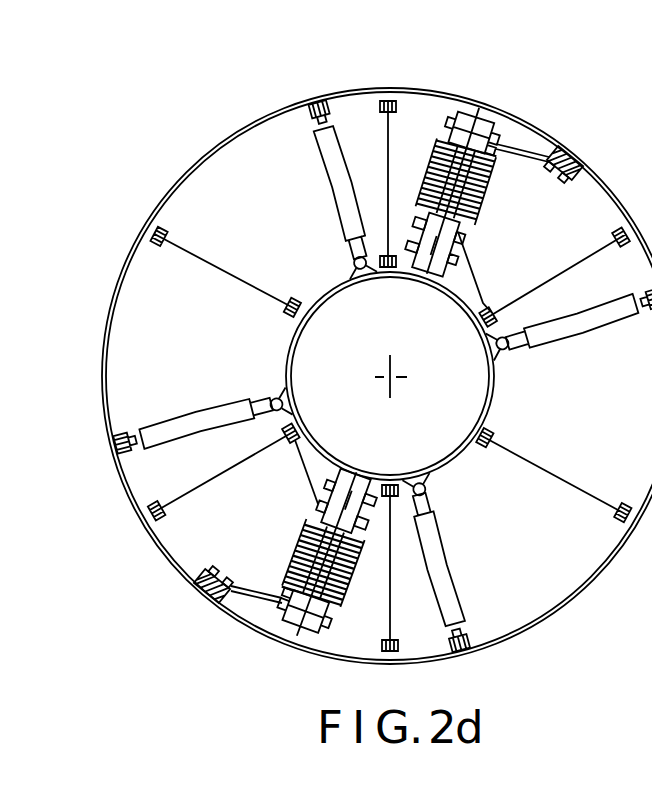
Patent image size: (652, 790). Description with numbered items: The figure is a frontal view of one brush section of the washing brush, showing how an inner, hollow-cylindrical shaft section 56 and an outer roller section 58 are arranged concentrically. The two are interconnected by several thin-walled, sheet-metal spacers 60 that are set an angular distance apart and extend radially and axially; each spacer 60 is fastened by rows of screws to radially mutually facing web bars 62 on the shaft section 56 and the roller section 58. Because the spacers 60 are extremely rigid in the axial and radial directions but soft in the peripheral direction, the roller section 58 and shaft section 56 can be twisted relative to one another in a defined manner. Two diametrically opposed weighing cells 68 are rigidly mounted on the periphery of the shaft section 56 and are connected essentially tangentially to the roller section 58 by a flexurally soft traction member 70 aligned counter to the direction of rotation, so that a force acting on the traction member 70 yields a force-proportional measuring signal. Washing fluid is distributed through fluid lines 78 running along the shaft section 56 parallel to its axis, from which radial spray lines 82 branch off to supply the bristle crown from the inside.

The shaft section 56 is at (297, 360).
The roller section 58 is at (218, 149).
The spacer 60 is at (183, 248).
The web bar 62 is at (158, 226).
The weighing cell 68 is at (490, 158).
The traction member 70 is at (556, 147).
The fluid line 78 is at (253, 580).
The spray line 82 is at (200, 417).